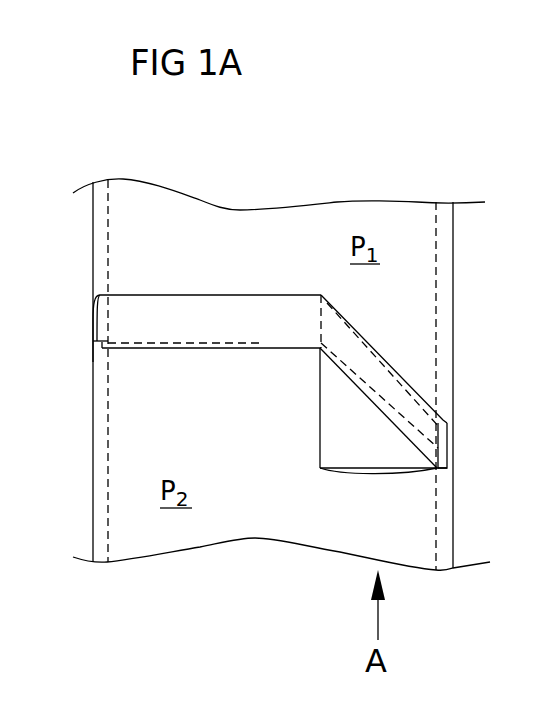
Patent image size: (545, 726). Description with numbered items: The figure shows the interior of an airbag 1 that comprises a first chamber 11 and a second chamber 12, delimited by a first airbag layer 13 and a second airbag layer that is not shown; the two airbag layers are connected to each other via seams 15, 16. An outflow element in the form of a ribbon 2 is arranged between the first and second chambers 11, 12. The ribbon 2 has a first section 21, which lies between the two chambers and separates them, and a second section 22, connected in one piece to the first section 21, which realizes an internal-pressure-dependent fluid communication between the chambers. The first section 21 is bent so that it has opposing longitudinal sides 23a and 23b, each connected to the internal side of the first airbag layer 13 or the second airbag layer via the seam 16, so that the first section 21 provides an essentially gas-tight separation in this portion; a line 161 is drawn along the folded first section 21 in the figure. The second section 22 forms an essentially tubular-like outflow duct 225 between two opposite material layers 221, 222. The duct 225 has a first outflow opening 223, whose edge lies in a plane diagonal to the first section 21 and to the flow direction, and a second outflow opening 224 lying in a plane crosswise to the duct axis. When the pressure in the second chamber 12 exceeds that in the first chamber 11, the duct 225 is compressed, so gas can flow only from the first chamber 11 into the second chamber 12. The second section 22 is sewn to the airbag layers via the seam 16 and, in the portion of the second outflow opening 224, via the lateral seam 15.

The airbag 1 is at (366, 175).
The ribbon 2 is at (289, 271).
The first chamber 11 is at (130, 263).
The second chamber 12 is at (118, 442).
The first airbag layer 13 is at (417, 287).
The seam 15 is at (475, 386).
The seam 16 is at (75, 371).
The first section 21 is at (202, 307).
The second section 22 is at (310, 425).
The longitudinal side 23a is at (93, 360).
The longitudinal side 23b is at (220, 353).
The cut line 161 is at (262, 344).
The material layer 221 is at (328, 442).
The material layer 222 is at (392, 473).
The first outflow opening 223 is at (372, 350).
The second outflow opening 224 is at (365, 469).
The outflow duct 225 is at (337, 453).